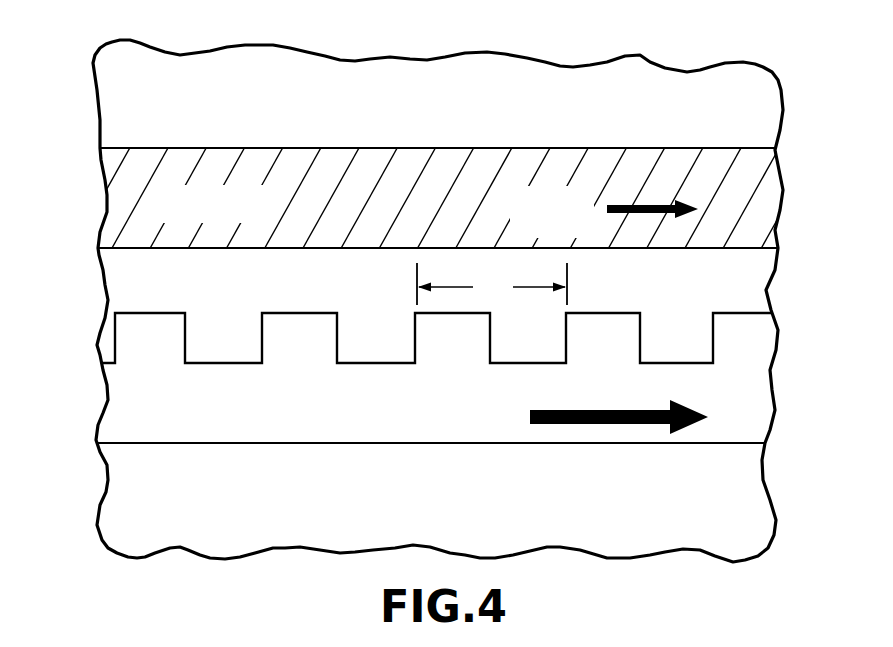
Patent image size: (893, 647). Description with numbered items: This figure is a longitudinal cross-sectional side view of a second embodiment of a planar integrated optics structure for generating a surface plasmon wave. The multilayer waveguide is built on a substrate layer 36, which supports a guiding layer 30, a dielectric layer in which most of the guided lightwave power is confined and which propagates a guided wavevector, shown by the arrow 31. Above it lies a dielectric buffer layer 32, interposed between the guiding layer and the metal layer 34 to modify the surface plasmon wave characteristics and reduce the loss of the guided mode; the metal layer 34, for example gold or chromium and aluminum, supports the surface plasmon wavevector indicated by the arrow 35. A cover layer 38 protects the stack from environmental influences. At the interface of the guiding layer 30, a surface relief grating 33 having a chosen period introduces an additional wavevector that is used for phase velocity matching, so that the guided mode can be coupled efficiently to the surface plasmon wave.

The cover layer 38 is at (137, 91).
The metal layer 34 is at (137, 200).
The surface plasmon wave vector K_SPW 35 is at (555, 195).
The dielectric buffer layer 32 is at (138, 290).
The grating 33 is at (697, 292).
The guiding layer 30 is at (138, 398).
The guided wave vector K_g 31 is at (622, 385).
The substrate layer 36 is at (137, 505).